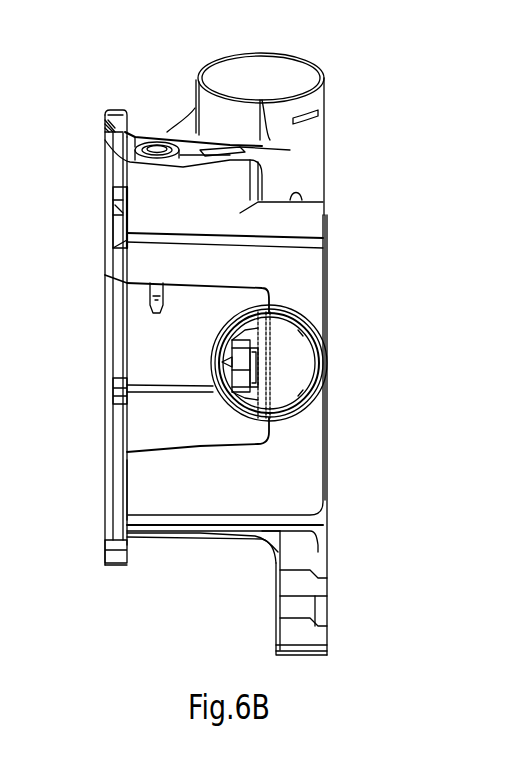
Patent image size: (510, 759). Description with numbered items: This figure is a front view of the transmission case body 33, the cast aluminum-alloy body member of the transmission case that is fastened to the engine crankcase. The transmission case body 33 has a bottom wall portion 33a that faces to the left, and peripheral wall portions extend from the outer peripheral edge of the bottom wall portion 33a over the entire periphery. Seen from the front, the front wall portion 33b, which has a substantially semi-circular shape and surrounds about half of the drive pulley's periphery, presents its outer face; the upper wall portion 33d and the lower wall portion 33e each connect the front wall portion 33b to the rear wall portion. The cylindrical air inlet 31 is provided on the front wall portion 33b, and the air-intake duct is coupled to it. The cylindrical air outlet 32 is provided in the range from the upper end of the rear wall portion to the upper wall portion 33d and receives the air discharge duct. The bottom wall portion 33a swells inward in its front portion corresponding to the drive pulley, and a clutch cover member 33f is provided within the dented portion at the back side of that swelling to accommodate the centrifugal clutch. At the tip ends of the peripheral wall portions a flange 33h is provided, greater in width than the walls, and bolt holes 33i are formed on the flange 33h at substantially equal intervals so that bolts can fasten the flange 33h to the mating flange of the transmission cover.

The cylindrical air inlet 31 is at (312, 326).
The cylindrical air outlet 32 is at (325, 70).
The transmission case body 33 is at (220, 350).
The bottom wall portion 33a is at (328, 448).
The front wall portion 33b is at (143, 487).
The upper wall portion 33d is at (155, 138).
The lower wall portion 33e is at (162, 538).
The clutch cover member 33f is at (272, 366).
The flange 33h is at (108, 332).
The bolt holes 33i is at (105, 121).